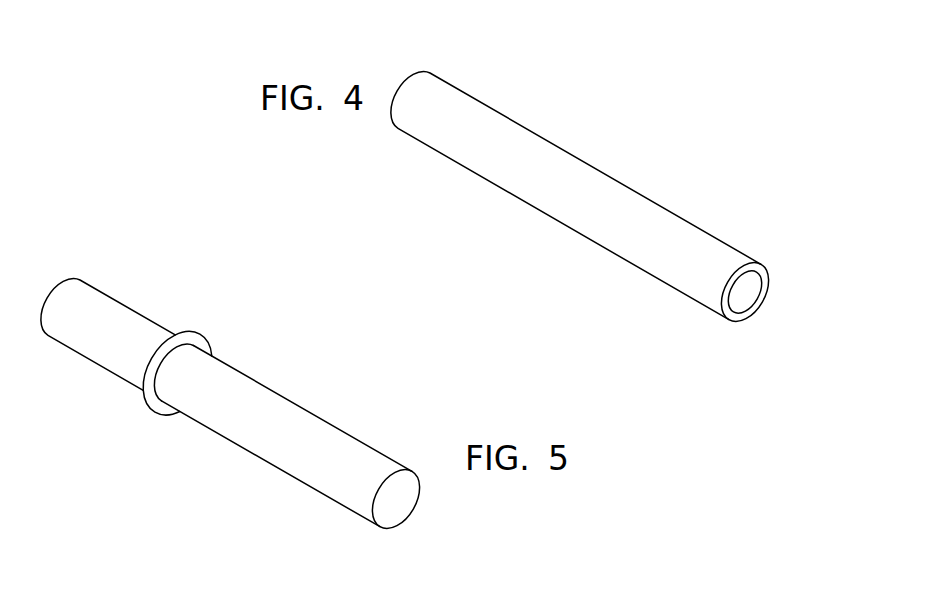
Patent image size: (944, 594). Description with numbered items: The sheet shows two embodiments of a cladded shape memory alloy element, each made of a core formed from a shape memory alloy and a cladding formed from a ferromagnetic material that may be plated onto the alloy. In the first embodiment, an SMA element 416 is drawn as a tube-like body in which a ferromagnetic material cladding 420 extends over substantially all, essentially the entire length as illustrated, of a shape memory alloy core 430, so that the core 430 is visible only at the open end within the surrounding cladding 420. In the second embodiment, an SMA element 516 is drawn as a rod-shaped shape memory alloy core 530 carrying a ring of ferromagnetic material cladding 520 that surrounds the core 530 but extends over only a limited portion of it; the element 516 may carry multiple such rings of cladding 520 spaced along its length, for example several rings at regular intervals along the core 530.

In FIG. 4, the SMA element 416 is at (614, 179).
In FIG. 4, the ferromagnetic material cladding 420 is at (740, 256).
In FIG. 4, the shape memory alloy core 430 is at (756, 288).
In FIG. 5, the SMA element 516 is at (235, 418).
In FIG. 5, the ring of ferromagnetic material cladding 520 is at (215, 328).
In FIG. 5, the shape memory alloy core 530 is at (360, 425).